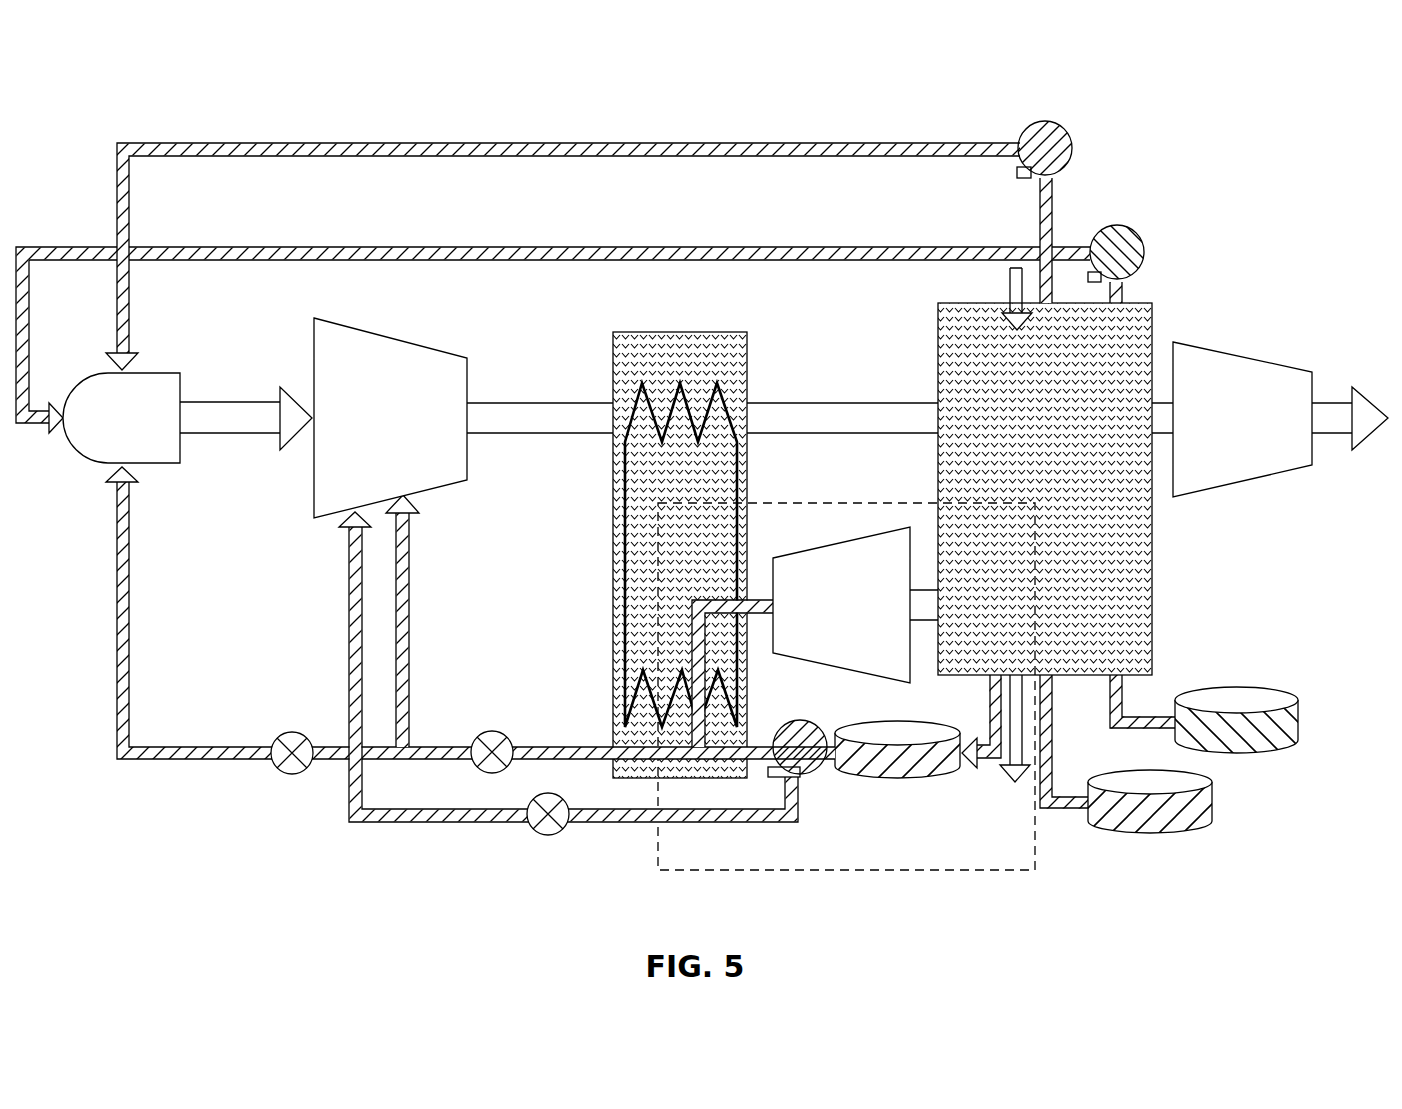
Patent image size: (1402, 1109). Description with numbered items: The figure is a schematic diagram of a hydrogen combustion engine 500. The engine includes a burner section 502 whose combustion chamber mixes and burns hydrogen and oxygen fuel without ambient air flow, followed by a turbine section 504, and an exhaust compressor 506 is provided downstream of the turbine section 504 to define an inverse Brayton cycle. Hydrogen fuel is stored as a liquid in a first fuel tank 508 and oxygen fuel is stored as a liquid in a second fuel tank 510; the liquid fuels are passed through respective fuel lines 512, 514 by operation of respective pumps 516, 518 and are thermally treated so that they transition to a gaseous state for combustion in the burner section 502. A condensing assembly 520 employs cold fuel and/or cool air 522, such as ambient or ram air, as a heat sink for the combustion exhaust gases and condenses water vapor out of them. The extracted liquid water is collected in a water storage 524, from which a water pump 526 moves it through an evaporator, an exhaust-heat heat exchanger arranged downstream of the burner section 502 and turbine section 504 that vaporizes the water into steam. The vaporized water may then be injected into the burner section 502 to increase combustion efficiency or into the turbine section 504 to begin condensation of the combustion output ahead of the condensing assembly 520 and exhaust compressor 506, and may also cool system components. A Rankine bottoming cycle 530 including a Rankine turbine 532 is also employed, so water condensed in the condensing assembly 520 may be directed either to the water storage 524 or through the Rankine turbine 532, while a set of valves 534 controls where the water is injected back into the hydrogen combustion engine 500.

The hydrogen combustion engine 500 is at (1208, 133).
The burner section 502 is at (160, 465).
The turbine section 504 is at (395, 338).
The exhaust compressor 506 is at (1255, 358).
The first fuel tank 508 is at (1237, 753).
The second fuel tank 510 is at (1150, 833).
The fuel line 512 is at (680, 247).
The fuel line 514 is at (560, 143).
The pump 516 is at (1118, 226).
The pump 518 is at (1065, 130).
The condensing assembly 520 is at (1152, 640).
The cool air 522 is at (1008, 300).
The water storage 524 is at (668, 335).
The water pump 526 is at (817, 768).
The Rankine bottoming cycle 530 is at (990, 873).
The Rankine turbine 532 is at (845, 669).
The valves 534 is at (296, 774).